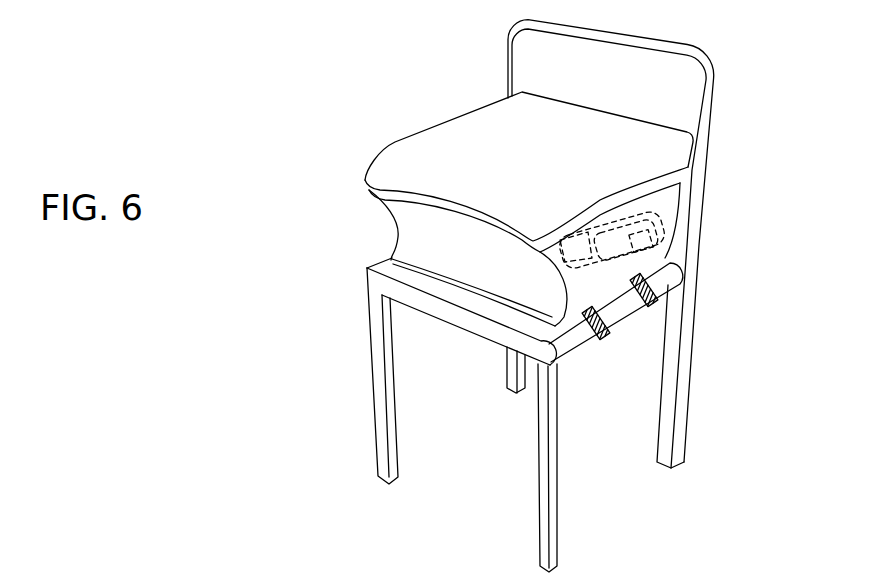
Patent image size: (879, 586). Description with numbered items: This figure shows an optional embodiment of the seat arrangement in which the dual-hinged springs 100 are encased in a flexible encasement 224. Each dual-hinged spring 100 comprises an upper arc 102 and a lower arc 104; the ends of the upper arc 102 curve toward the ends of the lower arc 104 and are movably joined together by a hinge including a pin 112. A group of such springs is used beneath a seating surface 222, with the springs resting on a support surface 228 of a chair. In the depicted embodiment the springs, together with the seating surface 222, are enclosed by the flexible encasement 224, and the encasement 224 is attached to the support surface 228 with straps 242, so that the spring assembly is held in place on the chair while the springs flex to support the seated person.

The dual-hinged spring 100 is at (353, 218).
The seating surface 222 is at (383, 150).
The upper arc 102 is at (656, 203).
The pin 112 is at (664, 221).
The flexible encasement 224 is at (664, 238).
The lower arc 104 is at (673, 300).
The straps 242 is at (599, 340).
The support surface 228 is at (481, 343).